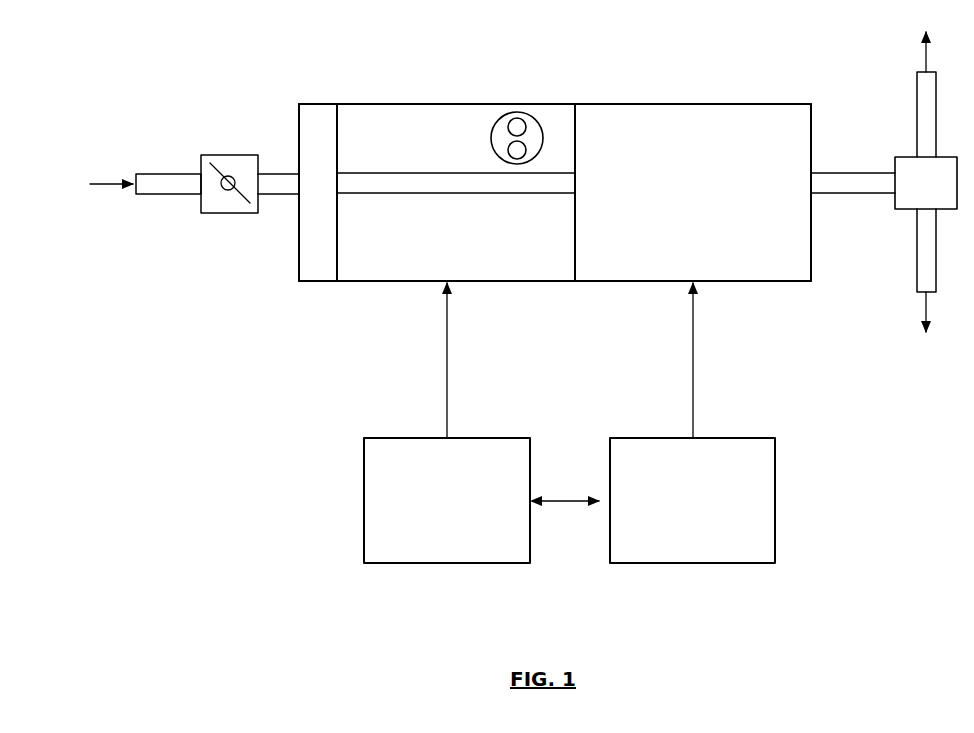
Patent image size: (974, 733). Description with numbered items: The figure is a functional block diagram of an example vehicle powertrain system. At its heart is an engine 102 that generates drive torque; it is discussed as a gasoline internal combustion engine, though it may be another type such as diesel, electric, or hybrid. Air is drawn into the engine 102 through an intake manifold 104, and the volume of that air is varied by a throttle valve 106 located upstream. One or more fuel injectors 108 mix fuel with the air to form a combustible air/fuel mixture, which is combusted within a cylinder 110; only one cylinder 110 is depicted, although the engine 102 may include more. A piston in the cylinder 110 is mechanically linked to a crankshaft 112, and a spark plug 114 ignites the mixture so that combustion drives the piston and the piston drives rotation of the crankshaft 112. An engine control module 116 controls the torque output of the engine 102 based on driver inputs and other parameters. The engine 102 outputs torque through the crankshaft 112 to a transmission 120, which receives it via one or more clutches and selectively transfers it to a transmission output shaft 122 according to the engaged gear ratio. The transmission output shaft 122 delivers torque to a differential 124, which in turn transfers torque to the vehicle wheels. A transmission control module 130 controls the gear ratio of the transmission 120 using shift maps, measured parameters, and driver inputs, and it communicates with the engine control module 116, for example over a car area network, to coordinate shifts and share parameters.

The engine 102 is at (455, 103).
The intake manifold 104 is at (320, 103).
The throttle valve 106 is at (232, 155).
The fuel injector 108 is at (507, 117).
The cylinder 110 is at (491, 150).
The crankshaft 112 is at (450, 193).
The spark plug 114 is at (526, 149).
The engine control module 116 is at (418, 437).
The transmission 120 is at (692, 103).
The transmission output shaft 122 is at (873, 173).
The differential 124 is at (908, 157).
The transmission control module 130 is at (656, 437).